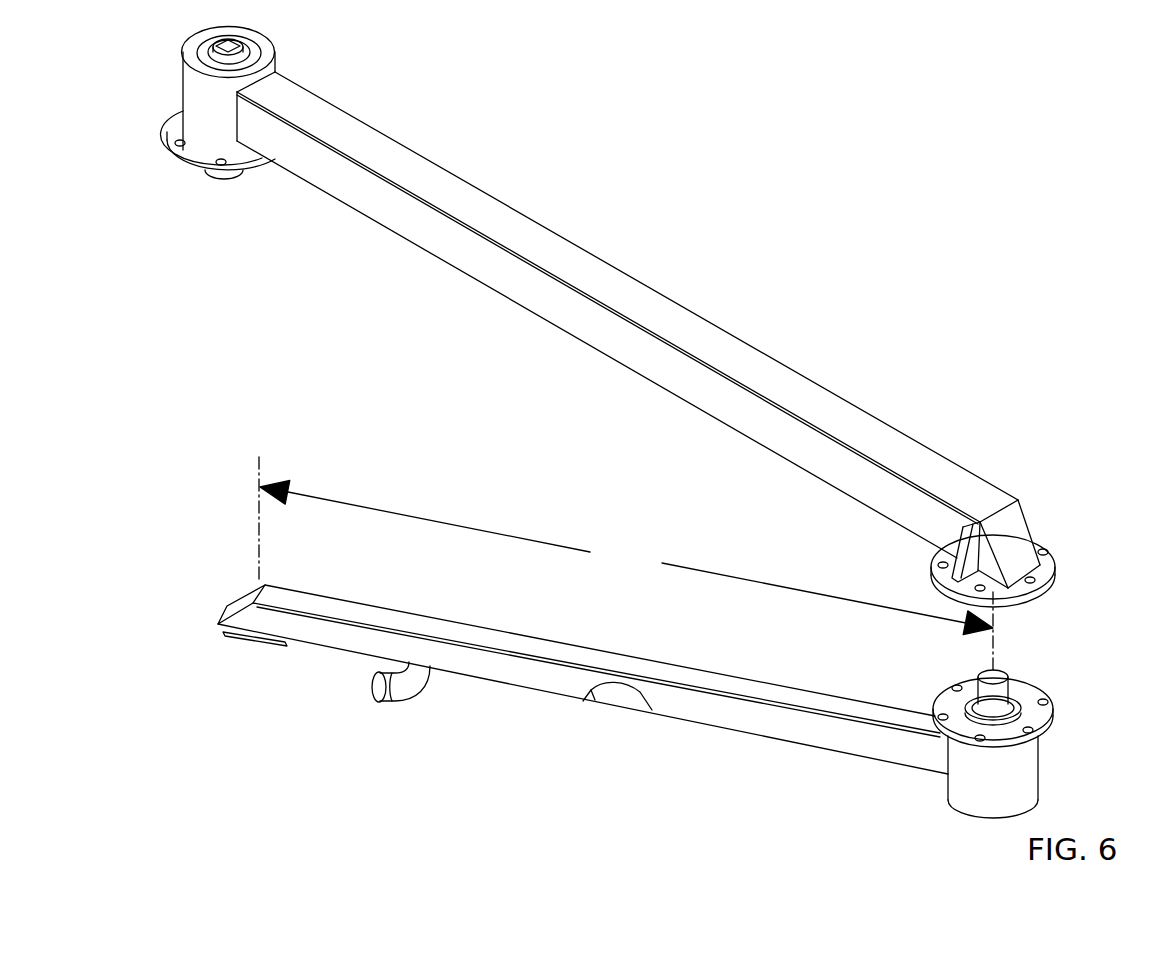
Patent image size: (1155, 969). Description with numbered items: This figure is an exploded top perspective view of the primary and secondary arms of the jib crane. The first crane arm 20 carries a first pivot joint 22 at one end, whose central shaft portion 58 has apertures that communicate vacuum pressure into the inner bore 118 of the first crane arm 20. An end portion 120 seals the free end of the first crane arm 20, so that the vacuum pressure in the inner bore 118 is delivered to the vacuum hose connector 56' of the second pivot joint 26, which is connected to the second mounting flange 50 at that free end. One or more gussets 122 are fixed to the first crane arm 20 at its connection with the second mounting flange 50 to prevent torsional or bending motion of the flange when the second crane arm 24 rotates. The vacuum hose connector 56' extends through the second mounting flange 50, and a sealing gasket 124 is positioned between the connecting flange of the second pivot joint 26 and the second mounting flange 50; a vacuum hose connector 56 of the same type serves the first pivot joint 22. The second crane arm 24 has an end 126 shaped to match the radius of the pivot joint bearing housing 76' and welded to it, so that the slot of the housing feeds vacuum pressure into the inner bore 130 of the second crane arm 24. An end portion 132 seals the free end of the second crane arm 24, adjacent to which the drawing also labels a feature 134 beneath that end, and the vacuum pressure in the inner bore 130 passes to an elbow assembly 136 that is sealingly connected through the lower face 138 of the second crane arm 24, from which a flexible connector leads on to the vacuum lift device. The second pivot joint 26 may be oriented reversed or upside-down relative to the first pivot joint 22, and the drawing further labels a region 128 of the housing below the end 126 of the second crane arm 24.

The central shaft portion 58 is at (937, 133).
The first pivot joint 22 is at (182, 98).
The vacuum hose connector 56 is at (221, 207).
The first crane arm 20 is at (794, 382).
The inner bore 118 is at (603, 343).
The end portion 120 is at (1020, 521).
The gusset 122 is at (966, 553).
The second mounting flange 50 is at (1058, 560).
The second crane arm 24 is at (673, 662).
The end portion 132 is at (240, 600).
The lip 134 is at (238, 638).
The elbow assembly 136 is at (374, 702).
The lower face 138 is at (466, 676).
The inner bore 130 is at (626, 697).
The second pivot joint 26 is at (993, 753).
The vacuum hose connector 56' is at (953, 694).
The sealing gasket 124 is at (1024, 706).
The pivot joint bearing housing 76' is at (993, 800).
The end 126 is at (948, 752).
The lower portion 128 is at (948, 790).